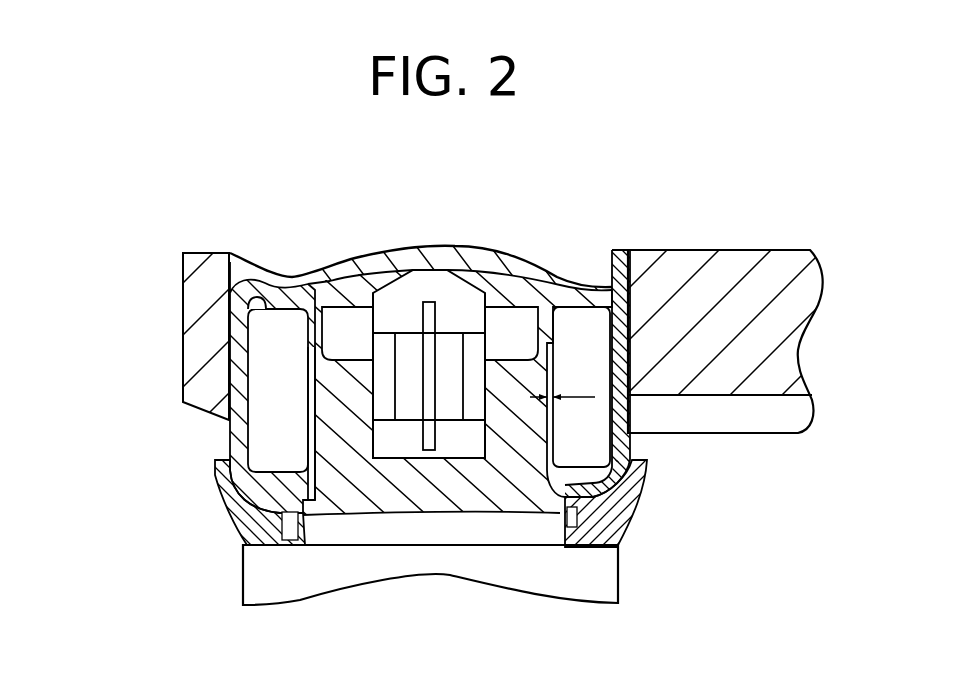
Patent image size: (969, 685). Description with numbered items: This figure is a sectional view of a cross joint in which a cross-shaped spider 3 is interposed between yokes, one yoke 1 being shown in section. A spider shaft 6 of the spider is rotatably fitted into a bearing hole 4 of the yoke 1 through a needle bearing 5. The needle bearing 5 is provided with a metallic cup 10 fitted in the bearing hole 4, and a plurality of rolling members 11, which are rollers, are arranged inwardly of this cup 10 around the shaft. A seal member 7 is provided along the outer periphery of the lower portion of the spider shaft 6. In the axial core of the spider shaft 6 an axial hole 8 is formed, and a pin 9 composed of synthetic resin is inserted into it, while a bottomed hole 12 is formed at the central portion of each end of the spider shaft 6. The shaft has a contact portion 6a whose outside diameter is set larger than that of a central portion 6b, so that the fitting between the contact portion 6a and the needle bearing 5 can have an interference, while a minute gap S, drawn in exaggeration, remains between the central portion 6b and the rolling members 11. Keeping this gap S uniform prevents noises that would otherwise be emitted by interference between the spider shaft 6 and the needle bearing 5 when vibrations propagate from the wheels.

The yoke 1 is at (747, 250).
The cross-shaped spider 3 is at (197, 540).
The bearing hole 4 is at (612, 258).
The needle bearing 5 is at (588, 278).
The spider shaft 6 is at (92, 364).
The contact portion 6a is at (313, 325).
The central portion 6b is at (325, 438).
The seal member 7 is at (598, 502).
The axial hole 8 is at (378, 446).
The pin 9 is at (460, 444).
The metallic cup 10 is at (472, 249).
The rolling member 11 is at (596, 421).
The bottomed hole 12 is at (344, 324).
The minute gap S is at (562, 384).